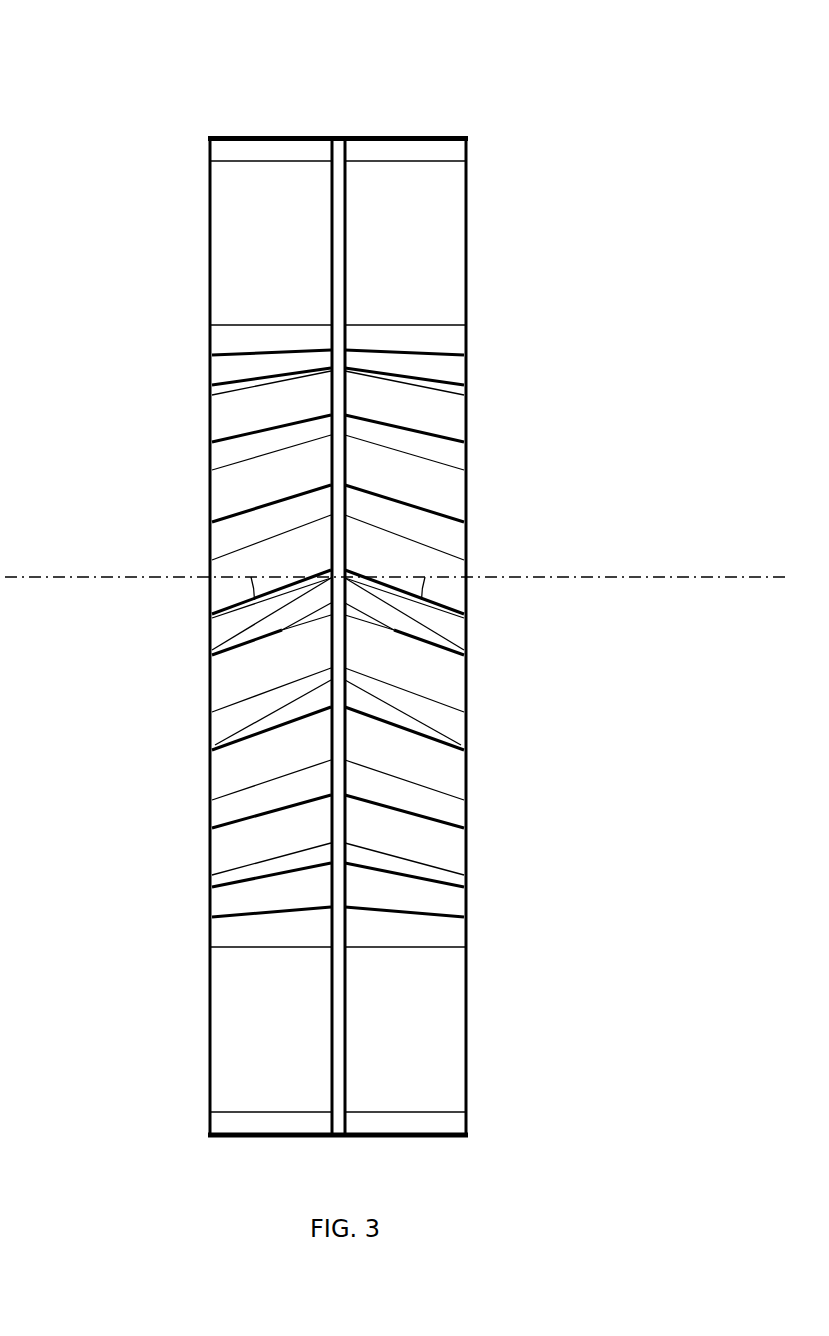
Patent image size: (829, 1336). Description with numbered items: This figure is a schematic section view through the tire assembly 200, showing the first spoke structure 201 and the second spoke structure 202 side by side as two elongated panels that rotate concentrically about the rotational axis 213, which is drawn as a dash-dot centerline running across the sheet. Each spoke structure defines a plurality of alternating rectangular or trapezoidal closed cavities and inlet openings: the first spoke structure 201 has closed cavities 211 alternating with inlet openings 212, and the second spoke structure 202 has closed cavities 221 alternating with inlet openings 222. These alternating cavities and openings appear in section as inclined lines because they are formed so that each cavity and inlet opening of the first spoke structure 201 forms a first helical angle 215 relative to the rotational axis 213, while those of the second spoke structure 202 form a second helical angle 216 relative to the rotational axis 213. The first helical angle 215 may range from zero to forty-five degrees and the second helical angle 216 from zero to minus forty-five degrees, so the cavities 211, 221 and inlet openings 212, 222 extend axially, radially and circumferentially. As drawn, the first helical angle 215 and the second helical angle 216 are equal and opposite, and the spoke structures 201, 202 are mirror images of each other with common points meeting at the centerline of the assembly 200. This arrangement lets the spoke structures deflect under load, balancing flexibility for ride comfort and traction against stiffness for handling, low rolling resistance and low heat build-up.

The tire assembly 200 is at (373, 576).
The first spoke structure 201 is at (182, 636).
The second spoke structure 202 is at (491, 636).
The closed cavities 211 is at (235, 673).
The inlet openings 212 is at (240, 720).
The rotational axis 213 is at (652, 577).
The first helical angle 215 is at (252, 598).
The second helical angle 216 is at (433, 592).
The closed cavities 221 is at (452, 677).
The inlet openings 222 is at (450, 628).